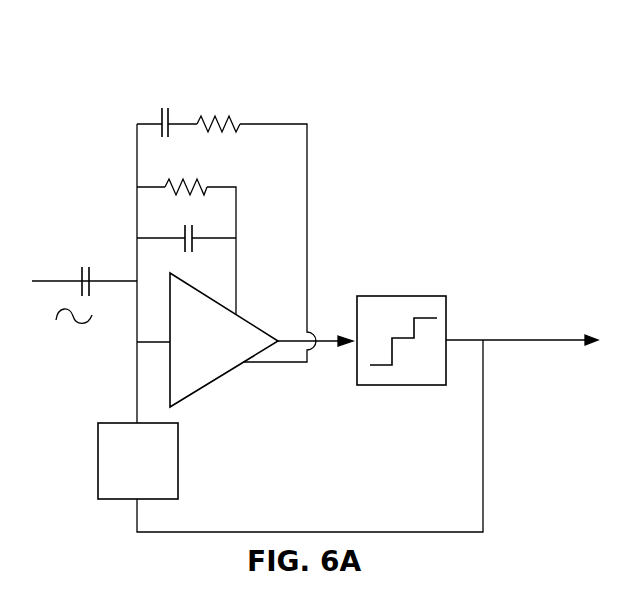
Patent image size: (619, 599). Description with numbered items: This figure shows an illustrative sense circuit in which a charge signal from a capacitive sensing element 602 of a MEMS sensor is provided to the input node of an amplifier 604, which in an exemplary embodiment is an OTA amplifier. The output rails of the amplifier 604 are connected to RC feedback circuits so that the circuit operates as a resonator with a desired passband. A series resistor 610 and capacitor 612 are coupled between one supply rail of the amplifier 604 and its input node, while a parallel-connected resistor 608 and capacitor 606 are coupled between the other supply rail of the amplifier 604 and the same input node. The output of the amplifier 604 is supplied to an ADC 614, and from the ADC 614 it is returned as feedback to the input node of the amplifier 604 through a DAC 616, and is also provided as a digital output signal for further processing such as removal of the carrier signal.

The capacitive sensing element 602 is at (85, 262).
The amplifier 604 is at (213, 380).
The capacitor 606 is at (188, 222).
The resistor 608 is at (182, 177).
The series resistor 610 is at (218, 112).
The capacitor 612 is at (165, 108).
The ADC 614 is at (428, 296).
The DAC 616 is at (98, 445).